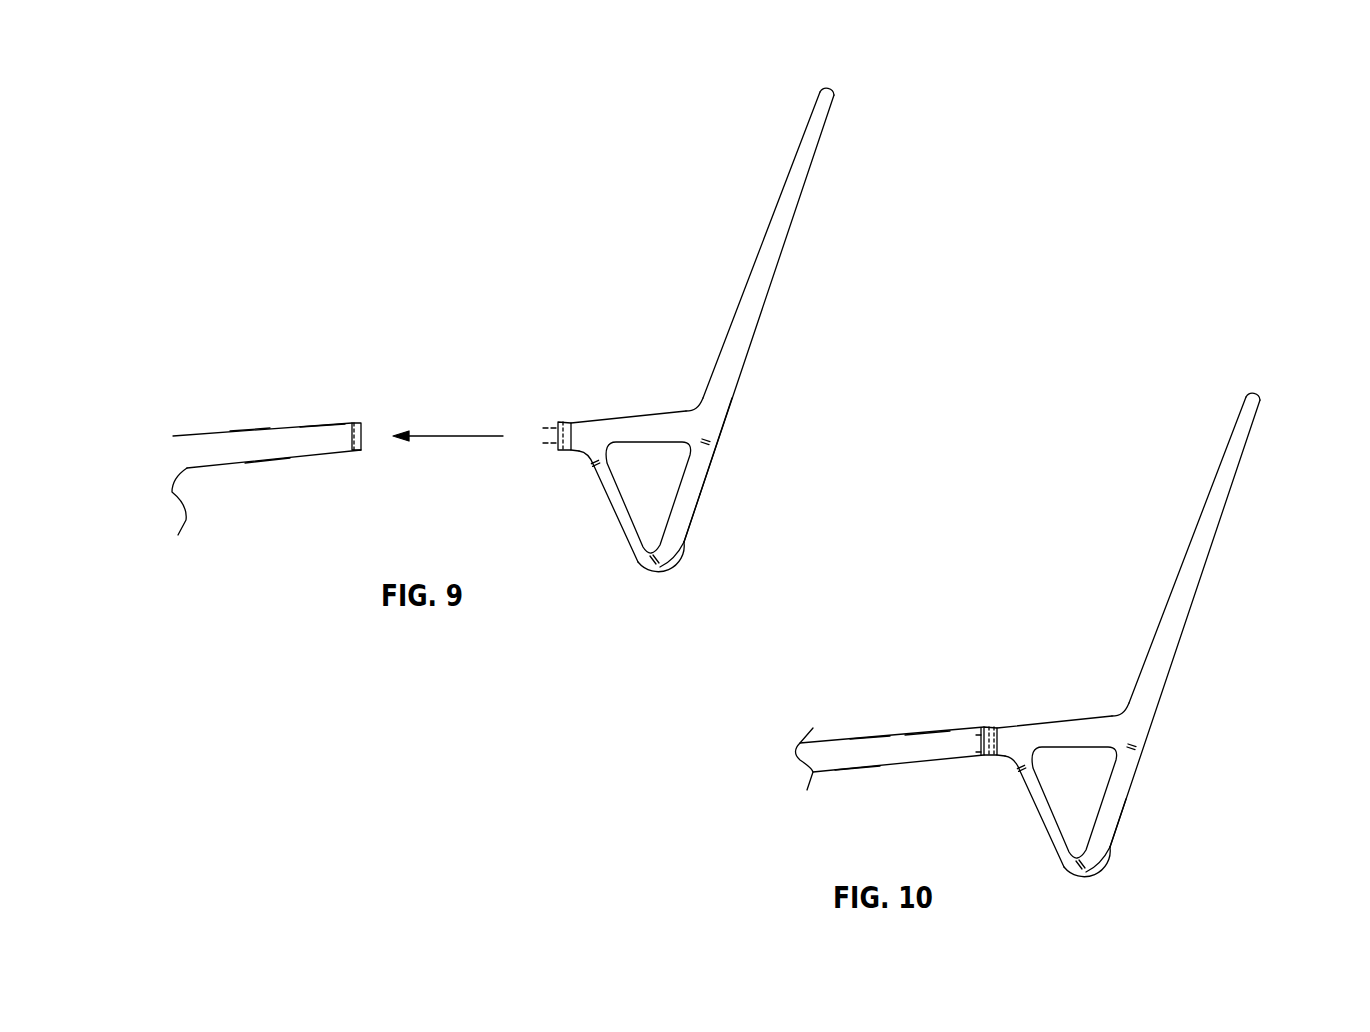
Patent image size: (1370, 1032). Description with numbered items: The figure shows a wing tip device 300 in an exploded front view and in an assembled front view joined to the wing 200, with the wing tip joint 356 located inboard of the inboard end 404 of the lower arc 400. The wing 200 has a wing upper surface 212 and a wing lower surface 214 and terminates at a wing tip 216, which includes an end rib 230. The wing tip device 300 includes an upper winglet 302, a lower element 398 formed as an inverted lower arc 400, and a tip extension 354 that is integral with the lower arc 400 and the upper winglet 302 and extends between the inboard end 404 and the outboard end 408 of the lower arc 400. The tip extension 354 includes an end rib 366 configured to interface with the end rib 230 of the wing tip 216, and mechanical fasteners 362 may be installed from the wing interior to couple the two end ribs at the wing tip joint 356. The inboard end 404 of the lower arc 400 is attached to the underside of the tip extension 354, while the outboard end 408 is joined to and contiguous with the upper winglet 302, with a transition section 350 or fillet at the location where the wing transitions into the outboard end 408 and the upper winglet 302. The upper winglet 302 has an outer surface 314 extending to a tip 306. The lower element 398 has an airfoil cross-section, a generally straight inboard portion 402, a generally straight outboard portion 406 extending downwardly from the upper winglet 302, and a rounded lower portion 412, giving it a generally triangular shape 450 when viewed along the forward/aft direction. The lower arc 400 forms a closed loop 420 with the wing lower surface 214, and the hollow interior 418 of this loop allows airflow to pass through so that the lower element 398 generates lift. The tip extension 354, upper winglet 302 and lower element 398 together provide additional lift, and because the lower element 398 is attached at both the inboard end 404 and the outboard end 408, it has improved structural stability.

In FIG. 9, the wing 200 is at (273, 450).
In FIG. 10, the wing 200 is at (880, 740).
In FIG. 9, the wing upper surface 212 is at (250, 430).
In FIG. 10, the wing upper surface 212 is at (870, 736).
In FIG. 9, the wing lower surface 214 is at (268, 460).
In FIG. 10, the wing lower surface 214 is at (857, 773).
In FIG. 9, the wing tip 216 is at (322, 426).
In FIG. 10, the wing tip 216 is at (928, 732).
In FIG. 9, the end rib 230 is at (360, 426).
In FIG. 10, the end rib 230 is at (980, 750).
In FIG. 9, the wing tip device 300 is at (743, 344).
In FIG. 10, the wing tip device 300 is at (1105, 655).
In FIG. 9, the upper winglet 302 is at (795, 299).
In FIG. 10, the upper winglet 302 is at (1214, 611).
In FIG. 9, the tip 306 is at (835, 87).
In FIG. 10, the tip 306 is at (1261, 404).
In FIG. 9, the outer surface 314 is at (775, 280).
In FIG. 10, the outer surface 314 is at (1200, 590).
In FIG. 9, the transition section 350 is at (689, 406).
In FIG. 10, the transition section 350 is at (1115, 707).
In FIG. 9, the tip extension 354 is at (684, 392).
In FIG. 10, the tip extension 354 is at (1113, 693).
In FIG. 9, the wing tip joint 356 is at (558, 424).
In FIG. 10, the wing tip joint 356 is at (990, 741).
In FIG. 9, the mechanical fasteners 362 is at (542, 443).
In FIG. 10, the mechanical fasteners 362 is at (975, 752).
In FIG. 9, the end rib 366 is at (556, 446).
In FIG. 10, the end rib 366 is at (995, 756).
In FIG. 9, the lower element 398 is at (636, 580).
In FIG. 10, the lower element 398 is at (1064, 886).
In FIG. 9, the lower arc 400 is at (616, 556).
In FIG. 10, the lower arc 400 is at (1047, 873).
In FIG. 9, the inboard portion 402 is at (605, 510).
In FIG. 10, the inboard portion 402 is at (1042, 833).
In FIG. 9, the inboard end 404 is at (591, 465).
In FIG. 10, the inboard end 404 is at (1018, 771).
In FIG. 9, the outboard portion 406 is at (681, 517).
In FIG. 10, the outboard portion 406 is at (1121, 810).
In FIG. 9, the outboard end 408 is at (711, 441).
In FIG. 10, the outboard end 408 is at (1136, 755).
In FIG. 9, the rounded lower portion 412 is at (657, 565).
In FIG. 10, the rounded lower portion 412 is at (1085, 871).
In FIG. 9, the hollow interior 418 is at (668, 466).
In FIG. 10, the hollow interior 418 is at (1074, 802).
In FIG. 9, the closed loop 420 is at (701, 499).
In FIG. 9, the triangular shape 450 is at (681, 553).
In FIG. 10, the triangular shape 450 is at (1109, 848).